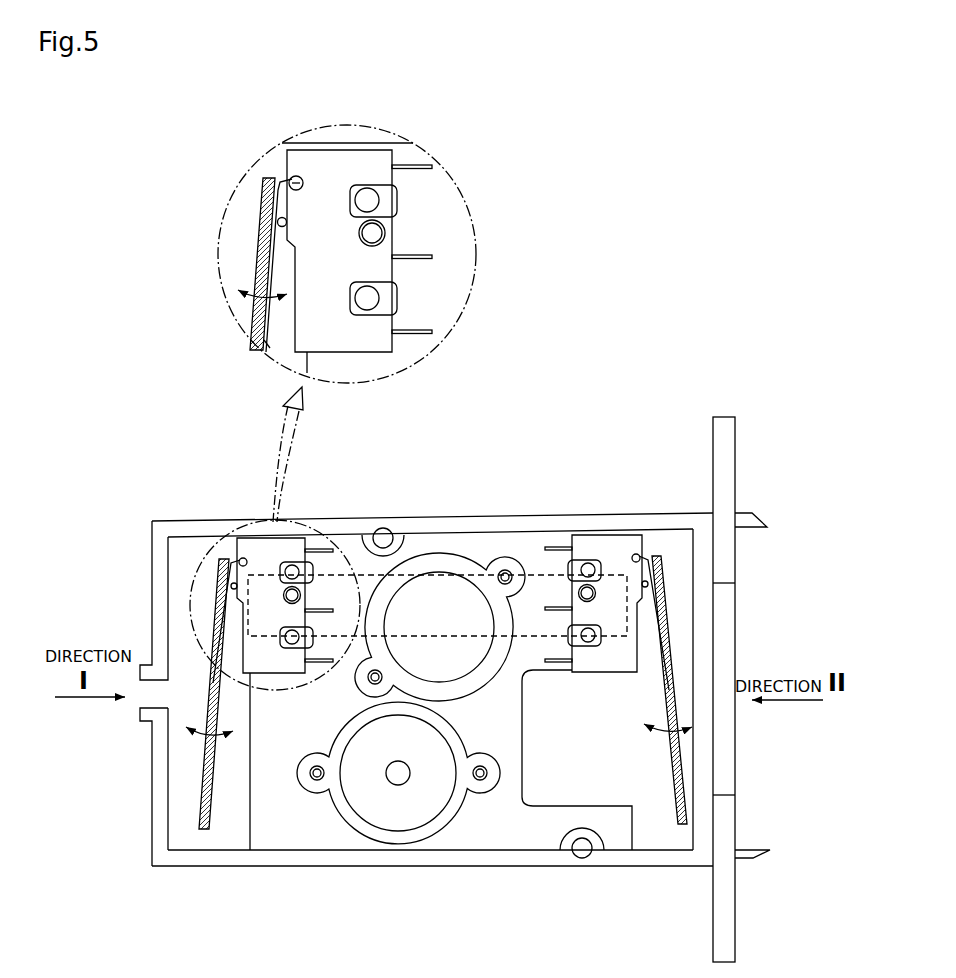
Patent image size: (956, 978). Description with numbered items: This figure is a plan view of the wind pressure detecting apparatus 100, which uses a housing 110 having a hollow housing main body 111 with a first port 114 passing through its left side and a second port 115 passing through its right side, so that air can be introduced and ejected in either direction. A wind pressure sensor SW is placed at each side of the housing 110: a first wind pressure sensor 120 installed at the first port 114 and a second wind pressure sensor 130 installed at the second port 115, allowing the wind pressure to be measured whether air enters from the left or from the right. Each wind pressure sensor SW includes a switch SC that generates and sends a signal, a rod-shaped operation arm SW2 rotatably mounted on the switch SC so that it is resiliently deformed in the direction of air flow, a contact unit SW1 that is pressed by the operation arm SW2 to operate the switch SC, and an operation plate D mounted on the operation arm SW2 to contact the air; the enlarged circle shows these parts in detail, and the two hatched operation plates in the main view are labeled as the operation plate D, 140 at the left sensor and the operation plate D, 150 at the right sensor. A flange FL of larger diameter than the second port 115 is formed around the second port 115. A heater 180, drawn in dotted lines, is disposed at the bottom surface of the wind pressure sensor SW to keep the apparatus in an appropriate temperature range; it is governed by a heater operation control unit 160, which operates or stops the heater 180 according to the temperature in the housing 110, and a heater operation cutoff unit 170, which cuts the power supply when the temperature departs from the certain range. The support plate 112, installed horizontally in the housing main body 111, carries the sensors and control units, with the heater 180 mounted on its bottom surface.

The wind pressure detecting apparatus 100 is at (451, 658).
The housing 110 is at (447, 681).
The housing main body 111 is at (208, 528).
The support plate 112 is at (285, 827).
The first port 114 is at (141, 702).
The second port 115 is at (723, 647).
The first wind pressure sensor 120 is at (280, 548).
The second wind pressure sensor 130 is at (628, 543).
The first door 140 is at (202, 775).
The second door 150 is at (660, 607).
The heater operation control unit 160 is at (485, 623).
The heater operation cutoff unit 170 is at (443, 756).
The heater 180 is at (612, 568).
The flange FL is at (733, 905).
The wind pressure sensor SW is at (341, 241).
The contact unit SW1 is at (278, 217).
The operation arm SW2 is at (270, 348).
The switch SC is at (393, 242).
The operation plate D is at (257, 262).